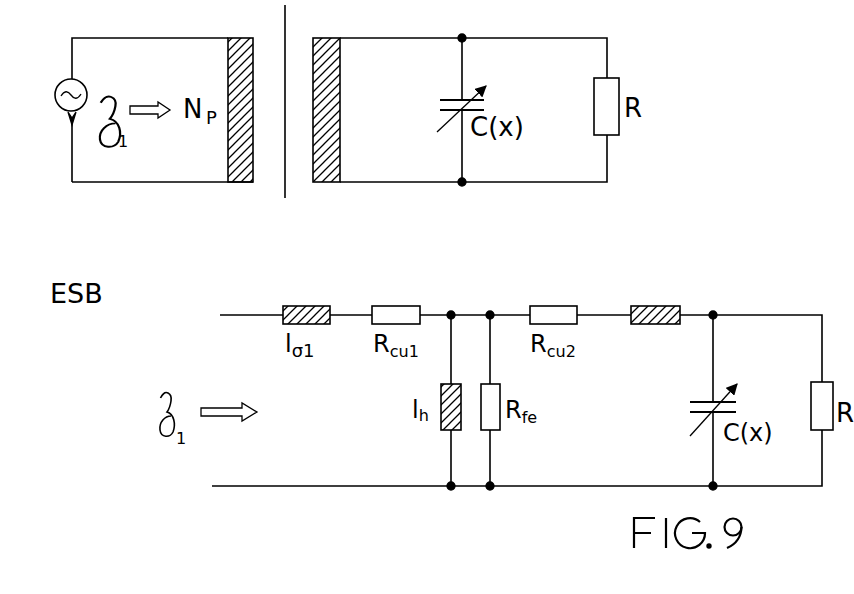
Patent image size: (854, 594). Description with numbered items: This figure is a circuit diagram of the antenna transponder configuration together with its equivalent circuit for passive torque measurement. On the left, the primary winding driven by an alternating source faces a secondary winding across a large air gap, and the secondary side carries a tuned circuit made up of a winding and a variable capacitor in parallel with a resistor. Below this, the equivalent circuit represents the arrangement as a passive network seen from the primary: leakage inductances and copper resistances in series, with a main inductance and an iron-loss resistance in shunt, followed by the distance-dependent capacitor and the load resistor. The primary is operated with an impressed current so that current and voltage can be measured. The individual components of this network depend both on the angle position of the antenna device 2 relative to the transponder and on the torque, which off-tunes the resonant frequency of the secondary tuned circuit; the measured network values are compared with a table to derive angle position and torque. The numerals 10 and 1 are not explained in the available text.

The transformer 10 is at (286, 99).
The secondary winding N1 1 is at (343, 110).
The antenna device 2 is at (655, 333).